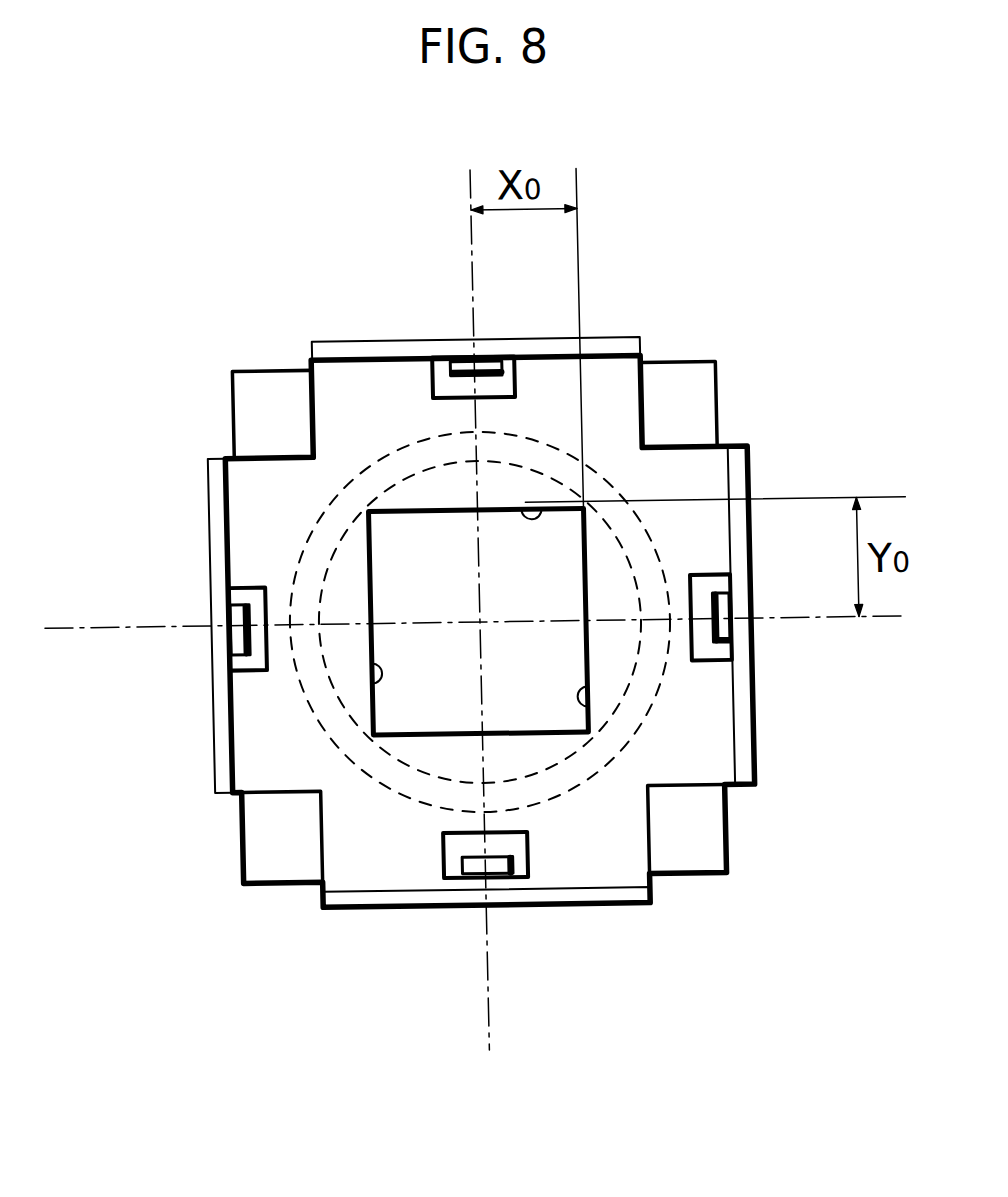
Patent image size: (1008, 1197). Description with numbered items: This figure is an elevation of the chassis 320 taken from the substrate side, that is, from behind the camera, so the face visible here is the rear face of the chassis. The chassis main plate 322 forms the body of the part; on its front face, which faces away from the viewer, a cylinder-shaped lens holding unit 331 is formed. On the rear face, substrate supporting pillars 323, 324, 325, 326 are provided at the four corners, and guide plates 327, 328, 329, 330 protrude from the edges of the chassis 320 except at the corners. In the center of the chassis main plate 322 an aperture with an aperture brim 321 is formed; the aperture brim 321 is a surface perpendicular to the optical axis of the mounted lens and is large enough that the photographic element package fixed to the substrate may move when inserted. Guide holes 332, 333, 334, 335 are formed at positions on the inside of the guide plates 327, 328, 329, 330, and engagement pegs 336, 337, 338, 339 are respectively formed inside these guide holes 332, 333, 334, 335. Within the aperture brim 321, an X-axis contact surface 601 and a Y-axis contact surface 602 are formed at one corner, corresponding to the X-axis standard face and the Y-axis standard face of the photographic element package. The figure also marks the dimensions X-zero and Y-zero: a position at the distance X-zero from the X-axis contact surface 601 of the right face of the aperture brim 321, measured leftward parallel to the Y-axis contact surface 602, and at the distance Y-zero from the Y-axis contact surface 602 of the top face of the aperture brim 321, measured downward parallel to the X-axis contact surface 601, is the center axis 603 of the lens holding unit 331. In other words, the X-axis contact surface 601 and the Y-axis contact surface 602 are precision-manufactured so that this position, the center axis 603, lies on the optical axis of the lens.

The chassis 320 is at (631, 320).
The aperture brim 321 is at (370, 684).
The chassis main plate 322 is at (713, 708).
The substrate supporting pillar 323 is at (708, 403).
The substrate supporting pillar 324 is at (690, 846).
The substrate supporting pillar 325 is at (277, 855).
The substrate supporting pillar 326 is at (262, 417).
The guide plate 327 is at (749, 684).
The guide plate 328 is at (566, 894).
The guide plate 329 is at (224, 686).
The guide plate 330 is at (349, 346).
The lens holding unit 331 is at (384, 352).
The guide hole 332 is at (703, 586).
The guide hole 333 is at (436, 871).
The guide hole 334 is at (241, 588).
The guide hole 335 is at (446, 368).
The engagement peg 336 is at (722, 630).
The engagement peg 337 is at (493, 870).
The engagement peg 338 is at (240, 628).
The engagement peg 339 is at (484, 365).
The X-axis contact surface 601 is at (588, 702).
The Y-axis contact surface 602 is at (550, 516).
The center axis 603 is at (481, 625).